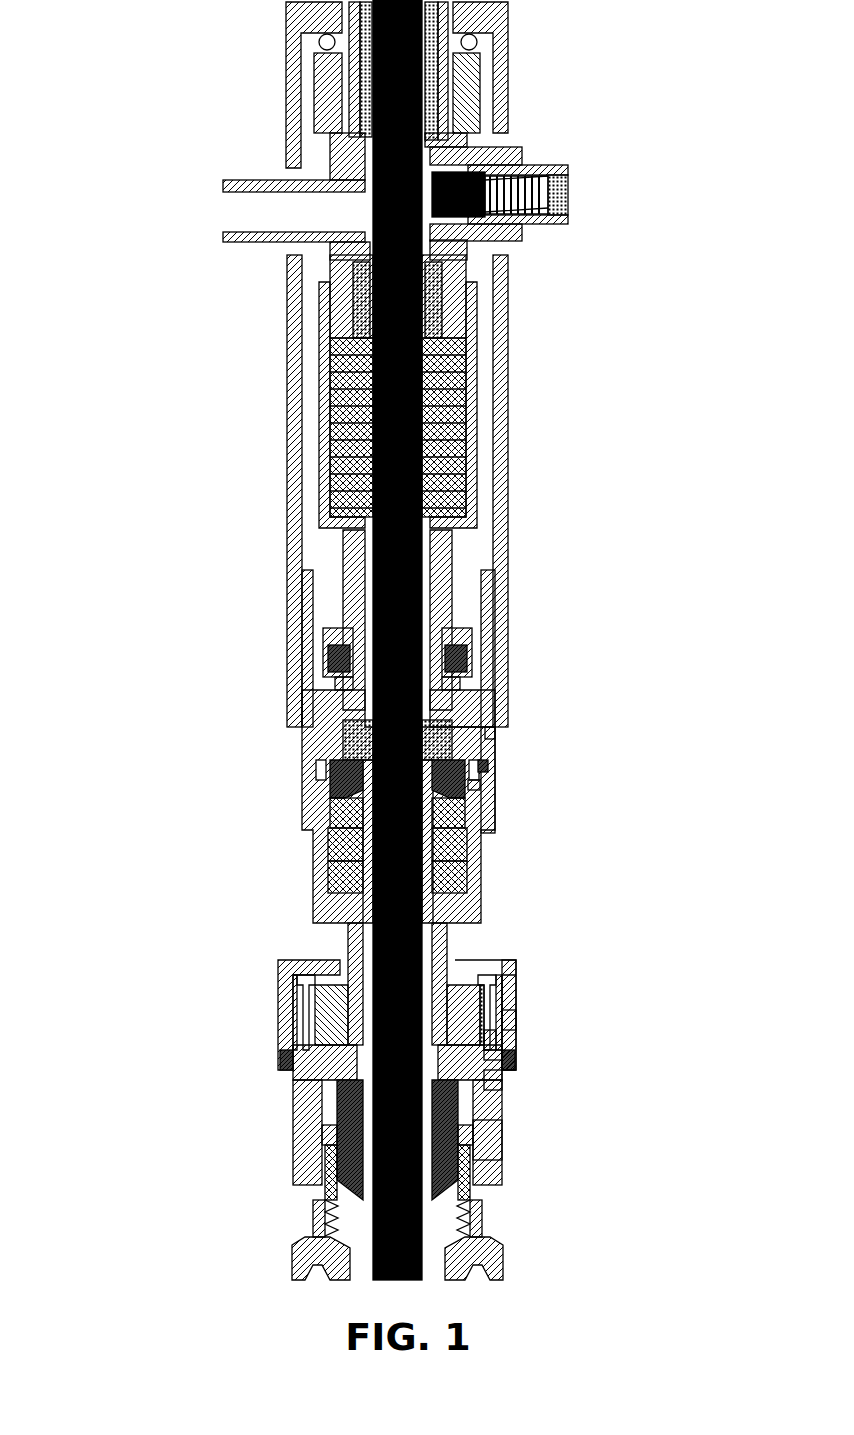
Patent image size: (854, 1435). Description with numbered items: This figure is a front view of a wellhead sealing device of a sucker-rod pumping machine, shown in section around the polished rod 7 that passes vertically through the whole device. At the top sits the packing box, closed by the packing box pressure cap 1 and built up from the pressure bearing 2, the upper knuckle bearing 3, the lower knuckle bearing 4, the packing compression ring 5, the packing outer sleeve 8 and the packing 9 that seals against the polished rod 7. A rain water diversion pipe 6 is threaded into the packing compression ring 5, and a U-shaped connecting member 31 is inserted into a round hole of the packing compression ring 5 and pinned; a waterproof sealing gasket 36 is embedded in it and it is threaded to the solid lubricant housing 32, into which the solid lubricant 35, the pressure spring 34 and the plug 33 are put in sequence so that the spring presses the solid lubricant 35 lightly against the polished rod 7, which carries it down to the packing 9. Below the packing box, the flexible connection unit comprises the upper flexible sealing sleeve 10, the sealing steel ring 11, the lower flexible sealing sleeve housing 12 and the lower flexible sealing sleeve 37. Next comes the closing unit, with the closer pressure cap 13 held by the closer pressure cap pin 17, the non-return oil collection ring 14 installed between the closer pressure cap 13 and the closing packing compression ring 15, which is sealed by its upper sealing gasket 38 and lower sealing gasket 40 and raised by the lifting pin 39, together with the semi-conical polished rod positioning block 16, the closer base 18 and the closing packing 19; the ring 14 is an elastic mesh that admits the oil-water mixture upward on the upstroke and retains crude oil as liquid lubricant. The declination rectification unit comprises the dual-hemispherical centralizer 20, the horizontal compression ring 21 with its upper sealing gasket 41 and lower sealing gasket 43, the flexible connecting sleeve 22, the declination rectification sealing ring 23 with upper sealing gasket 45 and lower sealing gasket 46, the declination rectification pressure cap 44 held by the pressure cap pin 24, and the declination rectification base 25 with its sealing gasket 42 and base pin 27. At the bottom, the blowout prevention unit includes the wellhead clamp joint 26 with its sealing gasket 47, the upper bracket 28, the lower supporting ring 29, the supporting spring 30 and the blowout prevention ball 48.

The packing box pressure cap 1 is at (320, 17).
The pressure bearing 2 is at (325, 44).
The upper knuckle bearing 3 is at (330, 71).
The lower knuckle bearing 4 is at (340, 97).
The packing compression ring 5 is at (340, 148).
The rain water diversion pipe 6 is at (225, 186).
The polished rod 7 is at (370, 217).
The packing outer sleeve 8 is at (330, 405).
The packing 9 is at (330, 447).
The upper flexible sealing sleeve 10 is at (330, 508).
The sealing steel ring 11 is at (345, 580).
The lower flexible sealing sleeve housing 12 is at (345, 648).
The closer pressure cap 13 is at (313, 712).
The non-return oil collection ring 14 is at (305, 742).
The closing packing compression ring 15 is at (300, 770).
The semi-conical polished rod positioning block 16 is at (300, 810).
The closer pressure cap pin 17 is at (310, 818).
The closer base 18 is at (320, 843).
The closing packing 19 is at (370, 893).
The dual-hemispherical centralizer 20 is at (340, 953).
The horizontal compression ring 21 is at (320, 983).
The flexible connecting sleeve 22 is at (318, 1008).
The declination rectification sealing ring 23 is at (320, 1032).
The declination rectification pressure cap pin 24 is at (290, 1057).
The declination rectification base 25 is at (297, 1085).
The wellhead clamp joint 26 is at (318, 1120).
The declination rectification base pin 27 is at (300, 1160).
The upper bracket 28 is at (310, 1172).
The lower supporting ring 29 is at (330, 1200).
The supporting spring 30 is at (330, 1227).
The U-shaped connecting member 31 is at (533, 147).
The solid lubricant housing 32 is at (567, 168).
The plug 33 is at (560, 185).
The pressure spring 34 is at (558, 210).
The solid lubricant 35 is at (568, 222).
The waterproof sealing gasket 36 is at (525, 240).
The lower flexible sealing sleeve 37 is at (465, 665).
The closing packing compression ring upper sealing gasket 38 is at (495, 733).
The closing packing compression ring lifting pin 39 is at (490, 766).
The closing packing compression ring lower sealing gasket 40 is at (470, 790).
The horizontal compression ring upper sealing gasket 41 is at (518, 967).
The declination rectification base sealing gasket 42 is at (518, 992).
The horizontal compression ring lower sealing gasket 43 is at (500, 996).
The declination rectification pressure cap 44 is at (516, 1019).
The declination rectification sealing ring upper sealing gasket 45 is at (497, 1039).
The declination rectification sealing ring lower sealing gasket 46 is at (505, 1057).
The wellhead clamp joint sealing gasket 47 is at (505, 1090).
The blowout prevention ball 48 is at (500, 1138).